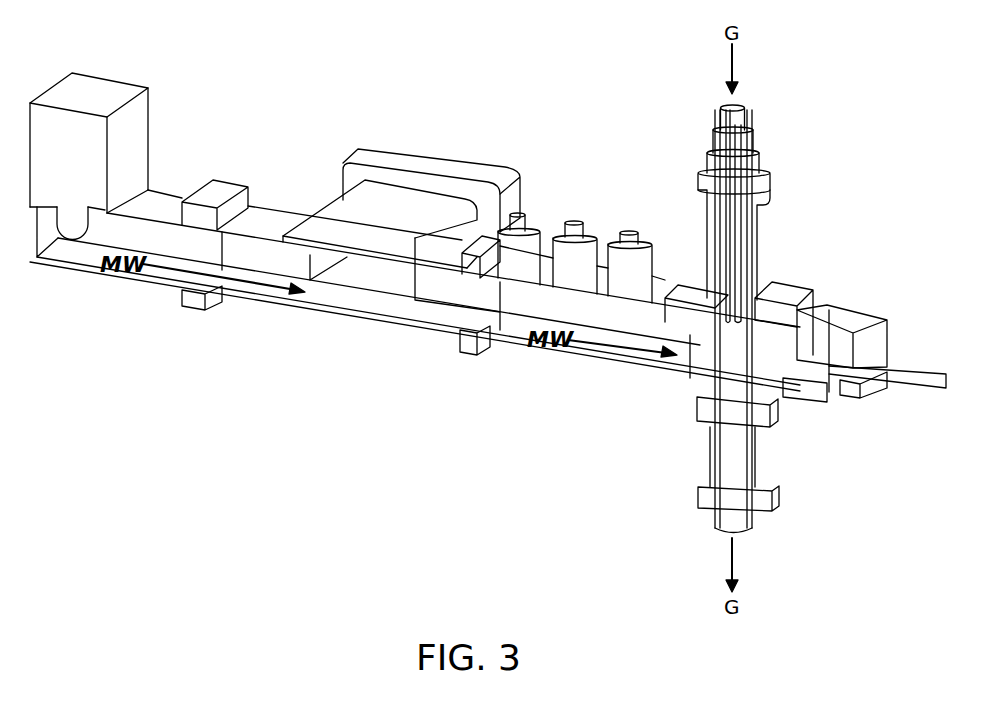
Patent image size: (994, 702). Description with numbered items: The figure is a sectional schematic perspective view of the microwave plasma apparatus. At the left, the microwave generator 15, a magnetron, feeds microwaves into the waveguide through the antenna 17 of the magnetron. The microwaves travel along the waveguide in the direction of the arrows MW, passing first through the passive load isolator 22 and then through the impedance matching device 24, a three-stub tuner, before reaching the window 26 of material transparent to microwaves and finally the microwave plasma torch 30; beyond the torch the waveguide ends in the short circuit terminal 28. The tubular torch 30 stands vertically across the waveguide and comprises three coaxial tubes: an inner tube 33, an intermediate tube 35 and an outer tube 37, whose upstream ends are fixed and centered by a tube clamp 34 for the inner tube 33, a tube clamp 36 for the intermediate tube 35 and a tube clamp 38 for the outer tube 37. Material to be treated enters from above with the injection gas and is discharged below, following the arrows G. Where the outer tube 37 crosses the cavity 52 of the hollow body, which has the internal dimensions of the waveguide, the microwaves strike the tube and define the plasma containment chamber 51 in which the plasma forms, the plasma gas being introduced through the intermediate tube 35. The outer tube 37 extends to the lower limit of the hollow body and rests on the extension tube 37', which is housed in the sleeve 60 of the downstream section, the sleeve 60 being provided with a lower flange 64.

The microwave generator 15 is at (92, 92).
The antenna of the magnetron 17 is at (70, 240).
The passive load isolator 22 is at (338, 217).
The impedance matching device 24 is at (511, 325).
The window 26 is at (692, 347).
The short circuit terminal 28 is at (838, 383).
The microwave plasma torch 30 is at (790, 223).
The inner tube 33 is at (731, 129).
The tube clamp 34 is at (722, 118).
The intermediate tube 35 is at (742, 158).
The tube clamp 36 is at (716, 145).
The outer tube 37 is at (778, 464).
The extension tube 37' is at (800, 540).
The tube clamp 38 is at (712, 165).
The plasma containment chamber 51 is at (745, 369).
The cavity 52 is at (786, 355).
The sleeve 60 is at (713, 460).
The lower flange 64 is at (705, 498).